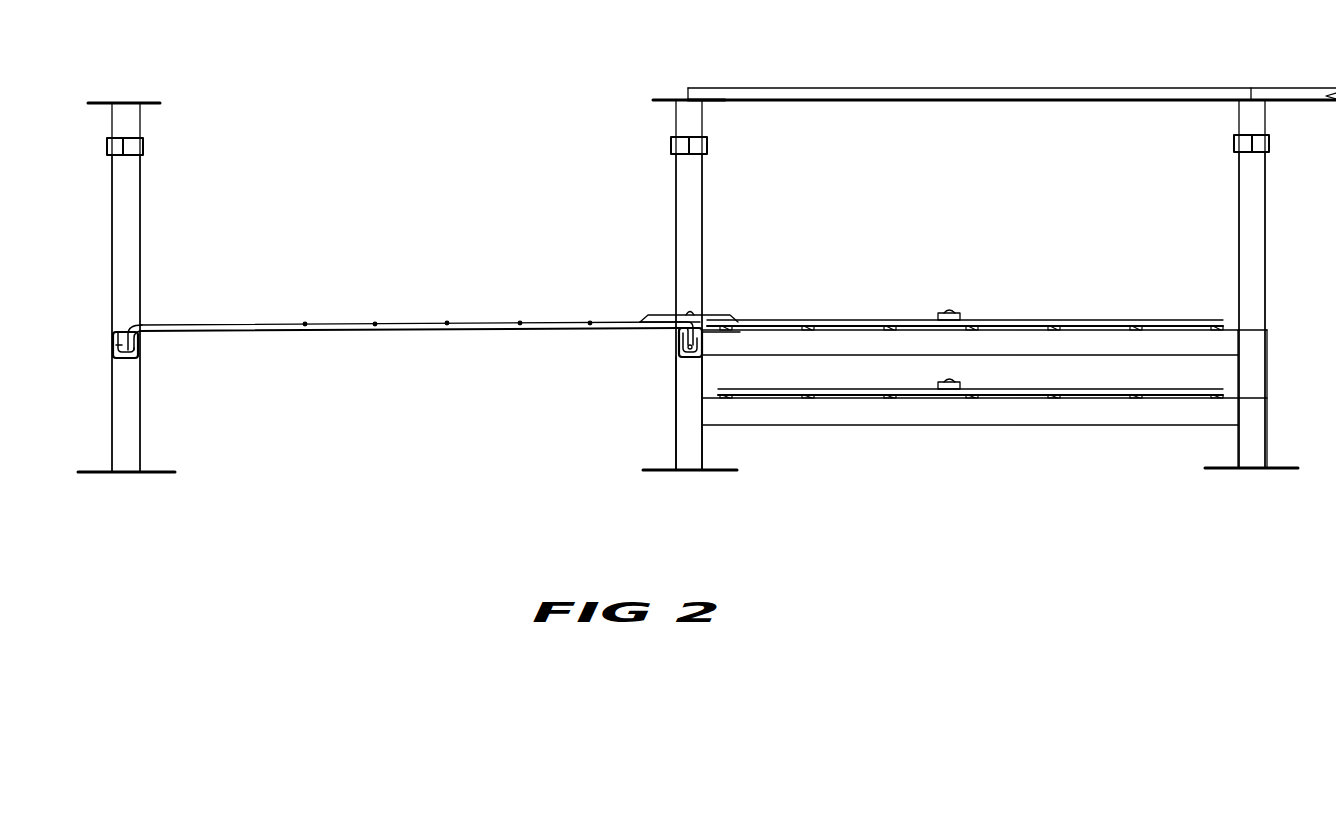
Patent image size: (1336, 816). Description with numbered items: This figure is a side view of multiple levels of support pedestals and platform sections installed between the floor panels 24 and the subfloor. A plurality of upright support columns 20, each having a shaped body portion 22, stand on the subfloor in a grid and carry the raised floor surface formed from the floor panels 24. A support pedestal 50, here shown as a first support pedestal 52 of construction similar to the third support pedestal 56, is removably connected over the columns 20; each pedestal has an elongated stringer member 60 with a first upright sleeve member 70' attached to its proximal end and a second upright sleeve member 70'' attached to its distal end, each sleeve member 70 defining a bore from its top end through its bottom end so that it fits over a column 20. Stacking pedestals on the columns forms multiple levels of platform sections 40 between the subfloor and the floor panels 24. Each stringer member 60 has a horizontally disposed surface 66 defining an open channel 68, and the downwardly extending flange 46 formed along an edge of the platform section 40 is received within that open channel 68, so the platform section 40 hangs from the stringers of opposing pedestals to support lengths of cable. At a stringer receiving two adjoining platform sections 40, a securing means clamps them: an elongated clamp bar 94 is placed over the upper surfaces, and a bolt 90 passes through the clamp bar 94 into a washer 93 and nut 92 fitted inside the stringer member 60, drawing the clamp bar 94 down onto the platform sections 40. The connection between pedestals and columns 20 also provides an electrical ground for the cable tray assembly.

The upright support column 20 is at (141, 186).
The shaped body portion 22 is at (128, 254).
The floor panel 24 is at (862, 92).
The platform section 40 is at (360, 331).
The downwardly extending flange 46 is at (116, 346).
The support pedestal 50 is at (1080, 338).
The first support pedestal 52 is at (995, 340).
The third support pedestal 56 is at (703, 345).
The elongated stringer member 60 is at (140, 344).
The horizontally disposed surface 66 is at (112, 330).
The open channel 68 is at (119, 330).
The sleeve member 70 is at (1019, 399).
The first upright sleeve member 70' is at (654, 413).
The second upright sleeve member 70'' is at (1019, 422).
The bolt 90 is at (698, 312).
The nut 92 is at (684, 343).
The washer 93 is at (682, 326).
The elongated clamp bar 94 is at (672, 318).